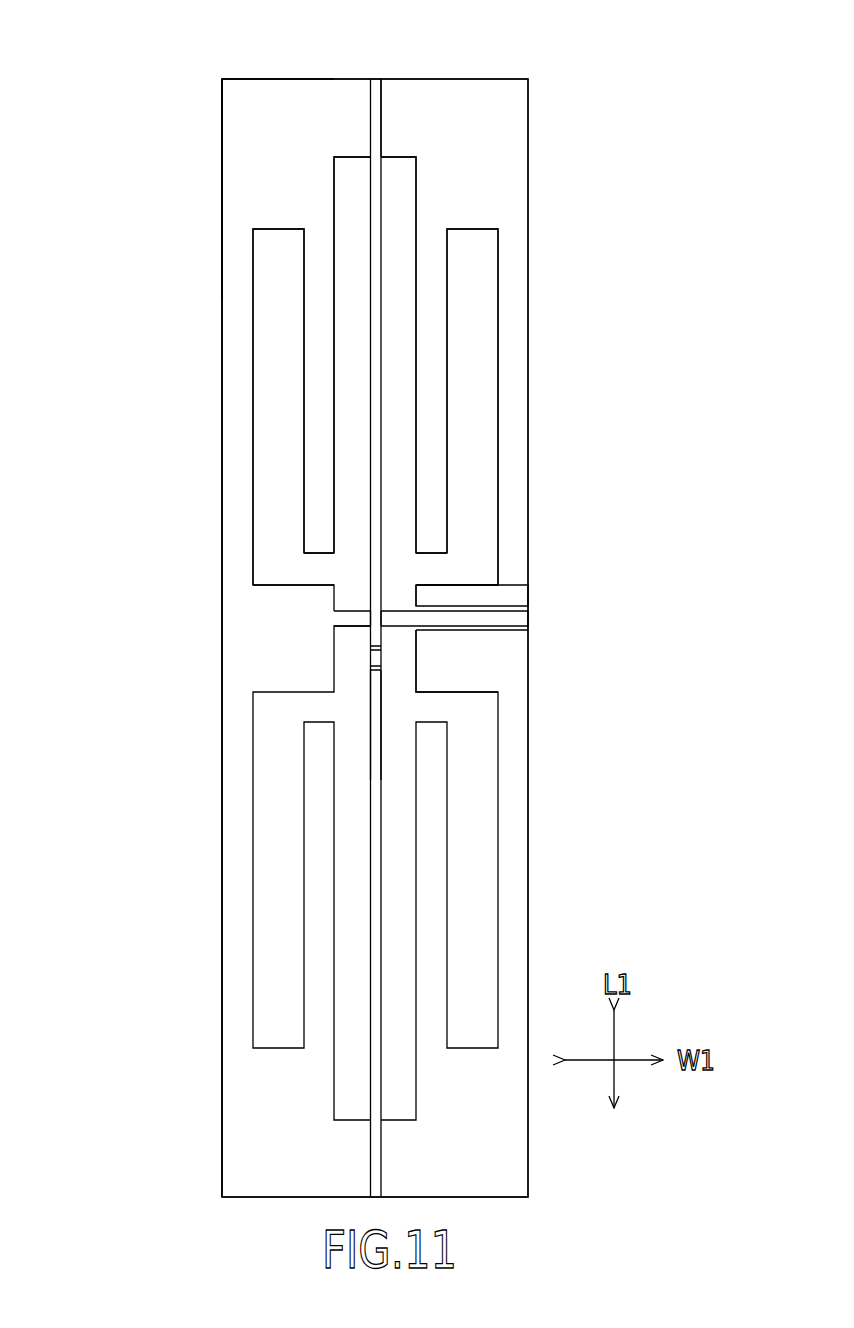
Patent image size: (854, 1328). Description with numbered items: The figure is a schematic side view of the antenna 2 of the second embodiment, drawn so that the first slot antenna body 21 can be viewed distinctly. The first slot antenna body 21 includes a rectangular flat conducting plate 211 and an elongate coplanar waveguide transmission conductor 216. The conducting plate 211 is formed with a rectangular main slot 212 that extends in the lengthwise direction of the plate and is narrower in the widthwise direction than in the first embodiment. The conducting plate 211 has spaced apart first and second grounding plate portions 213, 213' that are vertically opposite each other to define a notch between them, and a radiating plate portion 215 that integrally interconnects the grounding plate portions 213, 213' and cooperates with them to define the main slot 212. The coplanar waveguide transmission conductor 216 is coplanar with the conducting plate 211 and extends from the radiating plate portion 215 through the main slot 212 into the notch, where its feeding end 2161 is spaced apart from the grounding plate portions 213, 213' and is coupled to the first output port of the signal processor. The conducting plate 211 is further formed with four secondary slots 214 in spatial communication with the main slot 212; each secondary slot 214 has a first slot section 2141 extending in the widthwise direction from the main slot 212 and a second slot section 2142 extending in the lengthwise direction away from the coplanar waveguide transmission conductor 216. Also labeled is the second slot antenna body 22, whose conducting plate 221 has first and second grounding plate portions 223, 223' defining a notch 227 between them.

The antenna 2 is at (156, 66).
The first slot antenna body 21 is at (254, 72).
The conducting plate 211 is at (220, 128).
The main slot 212 is at (353, 191).
The radiating plate portion 215 is at (237, 220).
The second slot antenna body 22 is at (375, 78).
The conducting plate 221 is at (385, 111).
The secondary slot 214 is at (119, 442).
The second slot section 2142 is at (268, 393).
The first slot section 2141 is at (315, 571).
The first grounding plate portion 213 is at (515, 566).
The second grounding plate portion 213' is at (518, 680).
The coplanar waveguide transmission conductor 216 is at (353, 611).
The feeding end 2161 is at (528, 620).
The second grounding plate portion 223' is at (259, 630).
The notch 227 is at (375, 658).
The first grounding plate portion 223 is at (259, 725).